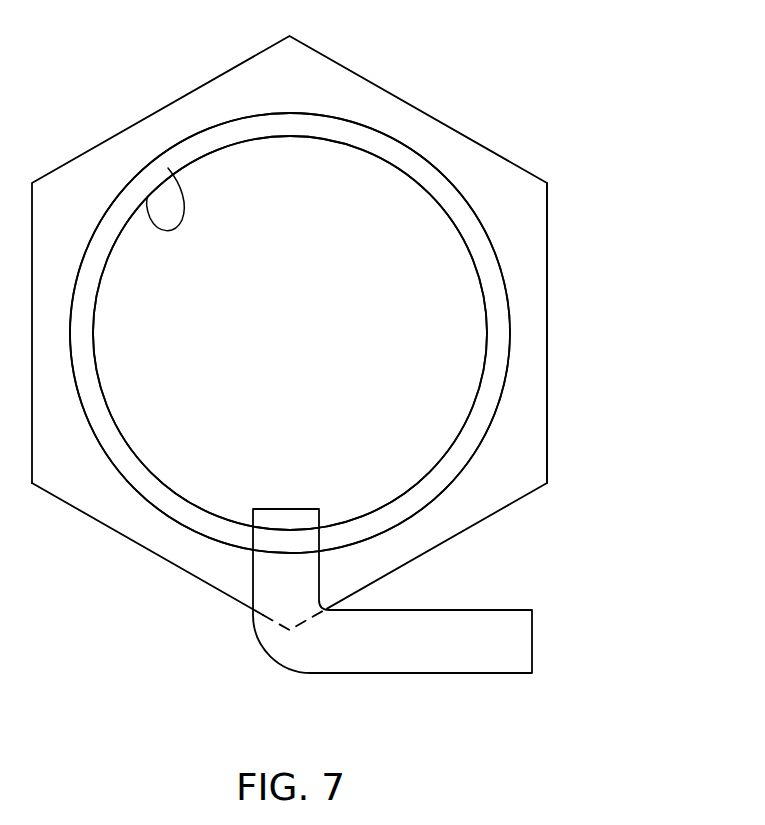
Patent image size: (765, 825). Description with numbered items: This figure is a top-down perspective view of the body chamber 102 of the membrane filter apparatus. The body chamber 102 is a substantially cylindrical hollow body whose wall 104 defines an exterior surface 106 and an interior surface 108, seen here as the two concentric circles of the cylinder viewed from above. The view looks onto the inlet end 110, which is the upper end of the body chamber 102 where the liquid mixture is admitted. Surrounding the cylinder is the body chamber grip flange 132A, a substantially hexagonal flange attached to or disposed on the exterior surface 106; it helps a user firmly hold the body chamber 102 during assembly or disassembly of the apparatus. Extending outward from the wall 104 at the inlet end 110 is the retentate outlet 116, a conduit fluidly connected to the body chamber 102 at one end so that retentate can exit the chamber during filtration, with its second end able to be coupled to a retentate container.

The body chamber 102 is at (423, 70).
The wall 104 is at (498, 293).
The exterior surface 106 is at (508, 365).
The interior surface 108 is at (168, 168).
The inlet end 110 is at (463, 185).
The retentate outlet 116 is at (517, 637).
The body chamber grip flange 132A is at (518, 220).